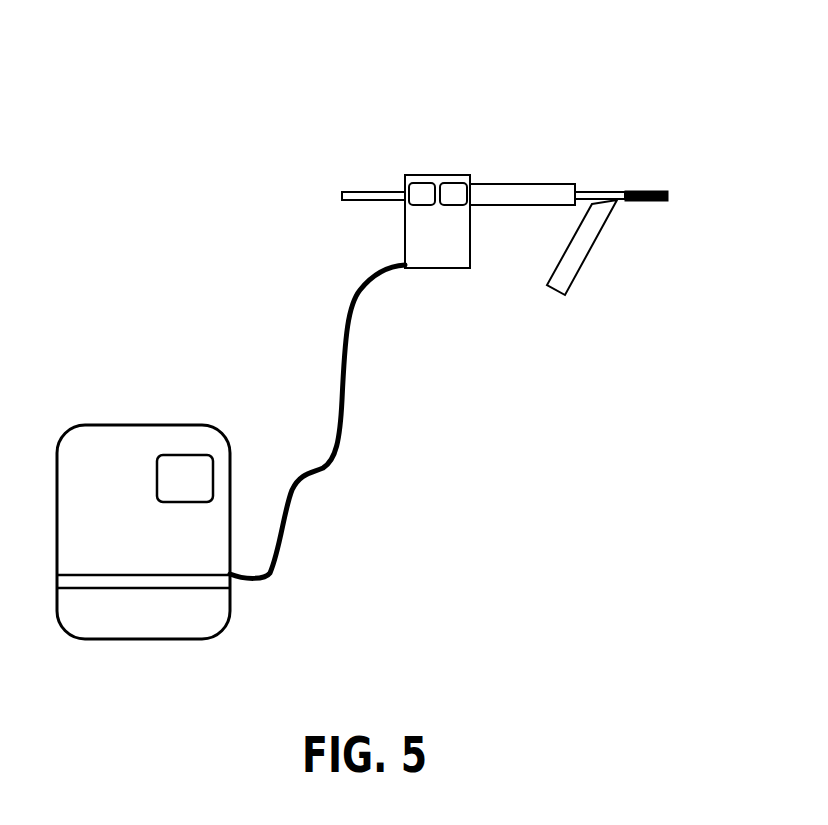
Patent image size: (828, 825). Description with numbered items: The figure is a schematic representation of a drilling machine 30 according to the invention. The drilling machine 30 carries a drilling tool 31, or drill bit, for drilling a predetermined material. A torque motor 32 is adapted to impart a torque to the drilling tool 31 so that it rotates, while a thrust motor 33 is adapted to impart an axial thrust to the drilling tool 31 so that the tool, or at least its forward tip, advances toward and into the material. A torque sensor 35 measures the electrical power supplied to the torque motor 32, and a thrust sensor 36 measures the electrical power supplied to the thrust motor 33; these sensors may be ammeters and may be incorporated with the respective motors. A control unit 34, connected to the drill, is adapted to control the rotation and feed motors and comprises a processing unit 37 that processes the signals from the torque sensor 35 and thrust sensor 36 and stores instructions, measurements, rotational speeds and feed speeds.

The drilling machine 30 is at (371, 335).
The drilling tool 31 is at (488, 177).
The torque motor 32 is at (537, 118).
The thrust motor 33 is at (363, 129).
The control unit 34 is at (148, 466).
The torque sensor 35 is at (455, 192).
The thrust sensor 36 is at (420, 192).
The processing unit 37 is at (188, 467).